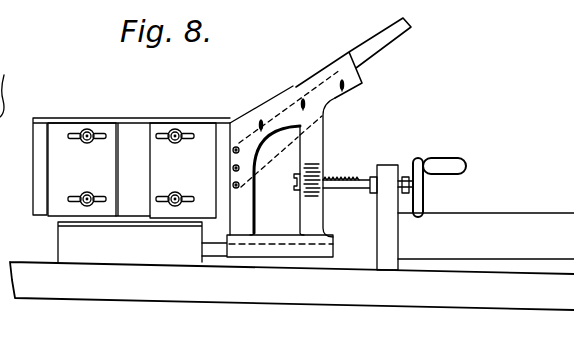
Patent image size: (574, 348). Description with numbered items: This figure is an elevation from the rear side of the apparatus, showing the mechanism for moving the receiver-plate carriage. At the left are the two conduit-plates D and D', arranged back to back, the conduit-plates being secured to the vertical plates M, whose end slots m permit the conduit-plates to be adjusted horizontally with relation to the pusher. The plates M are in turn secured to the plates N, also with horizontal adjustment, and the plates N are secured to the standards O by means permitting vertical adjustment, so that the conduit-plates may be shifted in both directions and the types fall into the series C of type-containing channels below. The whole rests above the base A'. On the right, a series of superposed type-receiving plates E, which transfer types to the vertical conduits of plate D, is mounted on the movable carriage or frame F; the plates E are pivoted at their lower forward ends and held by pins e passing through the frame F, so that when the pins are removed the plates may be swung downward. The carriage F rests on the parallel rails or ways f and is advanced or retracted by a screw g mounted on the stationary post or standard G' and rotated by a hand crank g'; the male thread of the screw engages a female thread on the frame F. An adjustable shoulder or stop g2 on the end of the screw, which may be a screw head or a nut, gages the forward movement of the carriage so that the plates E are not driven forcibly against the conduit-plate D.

The base A' is at (292, 286).
The series of type-containing channels C is at (486, 236).
The conduit-plate D' is at (125, 167).
The vertical plates M is at (82, 169).
The plates N is at (170, 170).
The slots m is at (130, 165).
The standards O is at (130, 242).
The conduit-plate D is at (285, 152).
The superposed type-receiving plates E is at (353, 58).
The pins e is at (301, 105).
The movable carriage or frame F is at (292, 167).
The adjustable shoulder or stop g2 is at (292, 177).
The screw g is at (350, 178).
The upright G' is at (387, 217).
The crank g' is at (432, 187).
The rails or ways f is at (277, 249).